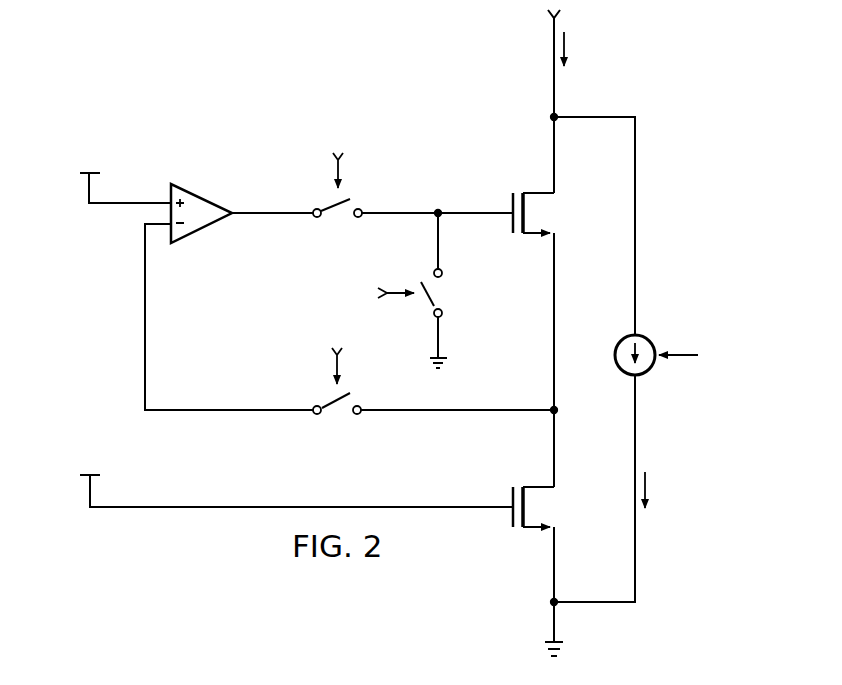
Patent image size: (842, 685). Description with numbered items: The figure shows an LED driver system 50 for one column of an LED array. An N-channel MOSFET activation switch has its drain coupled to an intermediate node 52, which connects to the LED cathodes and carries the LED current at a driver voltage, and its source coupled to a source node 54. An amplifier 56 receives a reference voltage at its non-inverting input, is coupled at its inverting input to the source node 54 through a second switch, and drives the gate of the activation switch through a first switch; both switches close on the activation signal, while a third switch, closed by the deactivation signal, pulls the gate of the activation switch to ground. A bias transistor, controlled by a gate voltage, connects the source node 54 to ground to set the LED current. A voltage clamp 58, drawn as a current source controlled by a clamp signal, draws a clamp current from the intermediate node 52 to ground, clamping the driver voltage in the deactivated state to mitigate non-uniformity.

The LED driver system 50 is at (86, 58).
The intermediate node 52 is at (525, 101).
The source node 54 is at (538, 425).
The amplifier 56 is at (204, 196).
The voltage clamp 58 is at (652, 336).